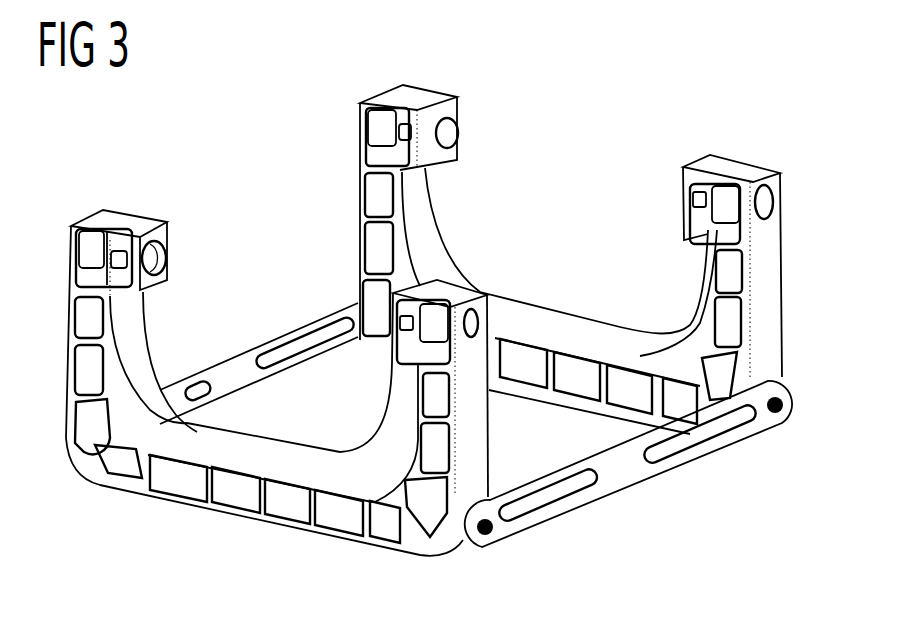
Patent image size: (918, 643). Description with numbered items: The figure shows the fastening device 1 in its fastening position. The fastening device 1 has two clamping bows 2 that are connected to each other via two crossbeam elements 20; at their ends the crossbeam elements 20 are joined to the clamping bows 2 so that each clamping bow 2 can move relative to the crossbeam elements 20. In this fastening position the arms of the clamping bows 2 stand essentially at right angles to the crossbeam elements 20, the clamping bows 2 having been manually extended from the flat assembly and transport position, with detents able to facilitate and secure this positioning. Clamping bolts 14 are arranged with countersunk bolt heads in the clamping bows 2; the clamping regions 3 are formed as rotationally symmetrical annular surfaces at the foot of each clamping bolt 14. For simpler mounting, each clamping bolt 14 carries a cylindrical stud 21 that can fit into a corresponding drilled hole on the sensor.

The fastening device 1 is at (455, 341).
The clamping bow 2 is at (448, 321).
The clamping region 3 is at (141, 233).
The clamping bolt 14 is at (183, 232).
The crossbeam element 20 is at (232, 381).
The cylindrical stud 21 is at (165, 257).